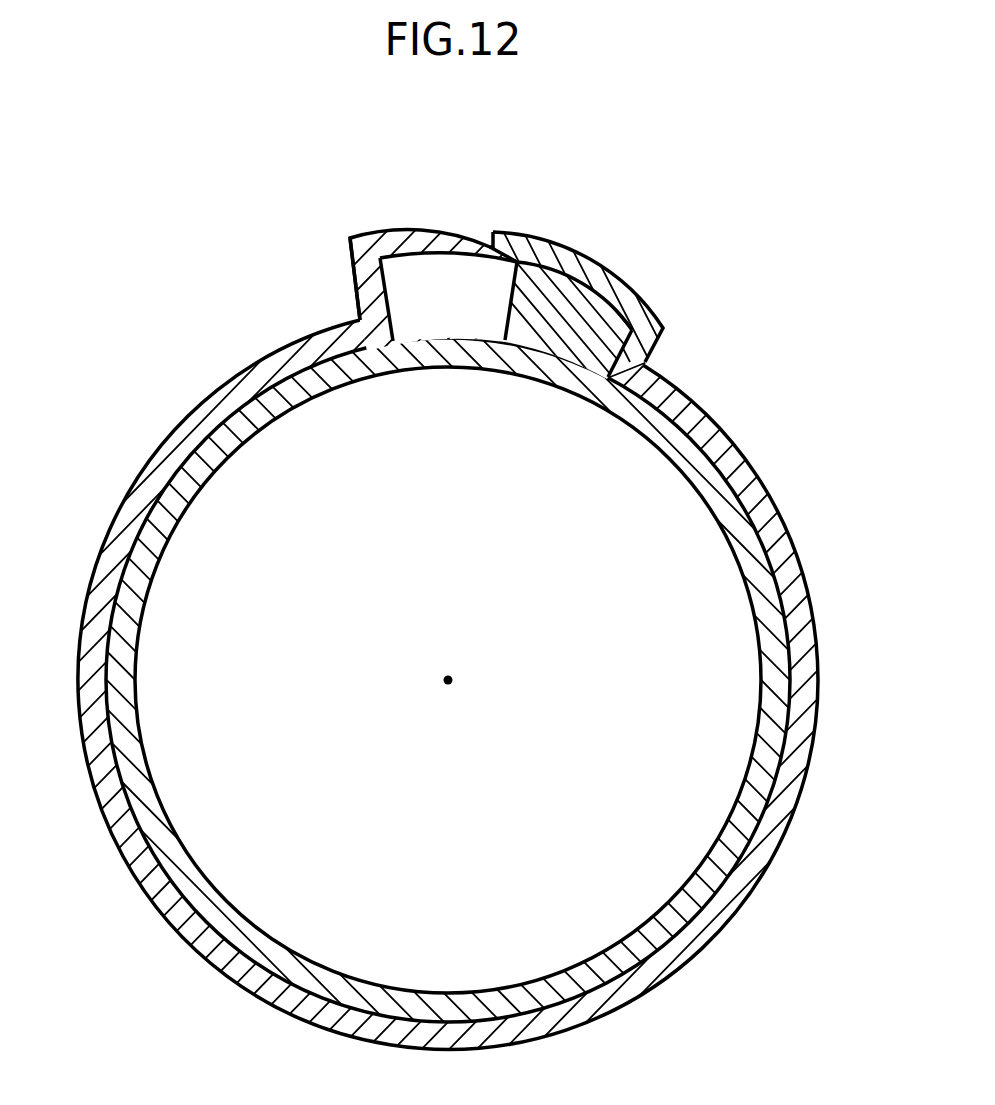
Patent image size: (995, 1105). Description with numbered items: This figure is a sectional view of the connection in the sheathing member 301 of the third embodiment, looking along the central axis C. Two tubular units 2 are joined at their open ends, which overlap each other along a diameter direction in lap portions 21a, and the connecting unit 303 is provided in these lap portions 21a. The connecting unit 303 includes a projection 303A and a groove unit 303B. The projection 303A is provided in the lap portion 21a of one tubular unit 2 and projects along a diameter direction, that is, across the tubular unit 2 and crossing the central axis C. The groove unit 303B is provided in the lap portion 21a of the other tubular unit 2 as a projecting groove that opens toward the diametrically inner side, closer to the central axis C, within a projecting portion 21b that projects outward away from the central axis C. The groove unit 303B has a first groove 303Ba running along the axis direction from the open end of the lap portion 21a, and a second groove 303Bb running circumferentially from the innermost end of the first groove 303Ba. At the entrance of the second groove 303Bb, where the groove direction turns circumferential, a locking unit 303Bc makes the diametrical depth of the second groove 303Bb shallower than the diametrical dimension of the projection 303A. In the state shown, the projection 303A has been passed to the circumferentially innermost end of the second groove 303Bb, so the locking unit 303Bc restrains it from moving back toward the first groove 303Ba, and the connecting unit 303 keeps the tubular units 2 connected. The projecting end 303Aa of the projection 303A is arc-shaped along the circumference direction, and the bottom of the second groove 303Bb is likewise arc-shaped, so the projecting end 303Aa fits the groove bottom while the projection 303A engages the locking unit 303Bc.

The tubular unit 2 is at (205, 401).
The lap portion 21a is at (400, 371).
The projecting portion 21b is at (367, 234).
The sheathing member 301 is at (497, 552).
The connecting unit 303 is at (497, 552).
The projection 303A is at (611, 267).
The projecting end 303Aa is at (605, 272).
The groove unit 303B is at (497, 552).
The first groove 303Ba is at (387, 301).
The second groove 303Bb is at (640, 329).
The locking unit 303Bc is at (508, 280).
The central axis C is at (448, 686).